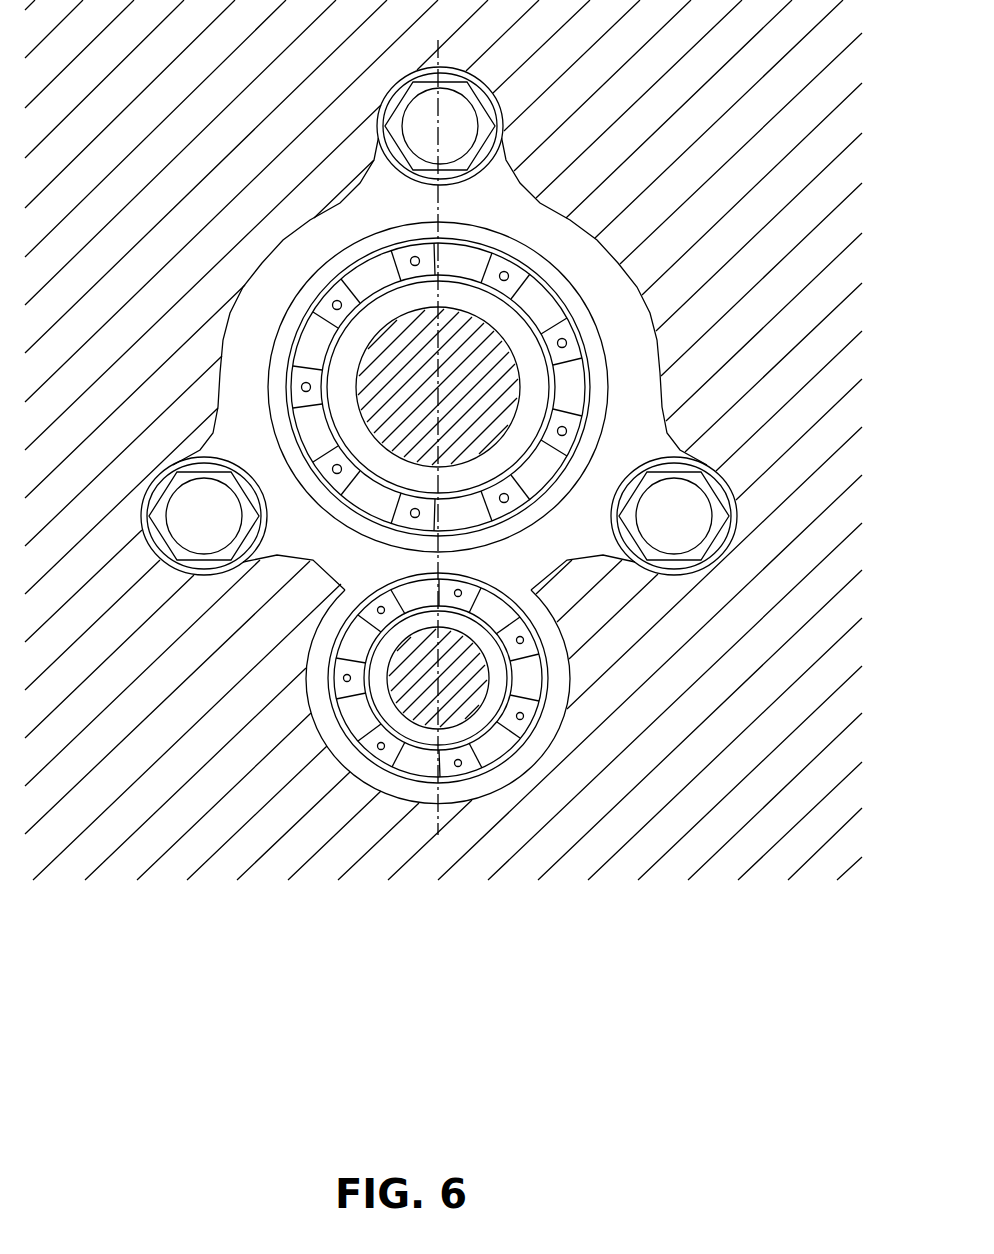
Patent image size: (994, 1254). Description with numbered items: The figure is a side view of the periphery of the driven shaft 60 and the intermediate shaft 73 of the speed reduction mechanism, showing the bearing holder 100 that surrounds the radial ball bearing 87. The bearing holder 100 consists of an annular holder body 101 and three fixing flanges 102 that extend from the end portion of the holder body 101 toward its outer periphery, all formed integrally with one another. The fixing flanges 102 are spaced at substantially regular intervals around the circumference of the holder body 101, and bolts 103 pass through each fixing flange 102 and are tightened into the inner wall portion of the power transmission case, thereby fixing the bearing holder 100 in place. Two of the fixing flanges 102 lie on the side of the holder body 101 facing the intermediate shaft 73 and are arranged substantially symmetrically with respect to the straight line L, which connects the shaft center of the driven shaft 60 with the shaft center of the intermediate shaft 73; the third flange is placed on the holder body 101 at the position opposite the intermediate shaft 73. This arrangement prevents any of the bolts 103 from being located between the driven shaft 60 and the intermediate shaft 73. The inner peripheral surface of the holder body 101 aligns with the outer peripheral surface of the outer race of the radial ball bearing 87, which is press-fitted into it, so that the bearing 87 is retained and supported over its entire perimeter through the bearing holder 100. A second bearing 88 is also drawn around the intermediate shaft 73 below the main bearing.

The bearing holder 100 is at (472, 364).
The holder body 101 is at (653, 308).
The fixing flanges 102 is at (438, 67).
The bolts 103 is at (422, 122).
The radial ball bearing 87 is at (328, 278).
The driven shaft 60 is at (390, 360).
The second bearing 88 is at (570, 684).
The intermediate shaft 73 is at (468, 703).
The straight line L is at (440, 812).